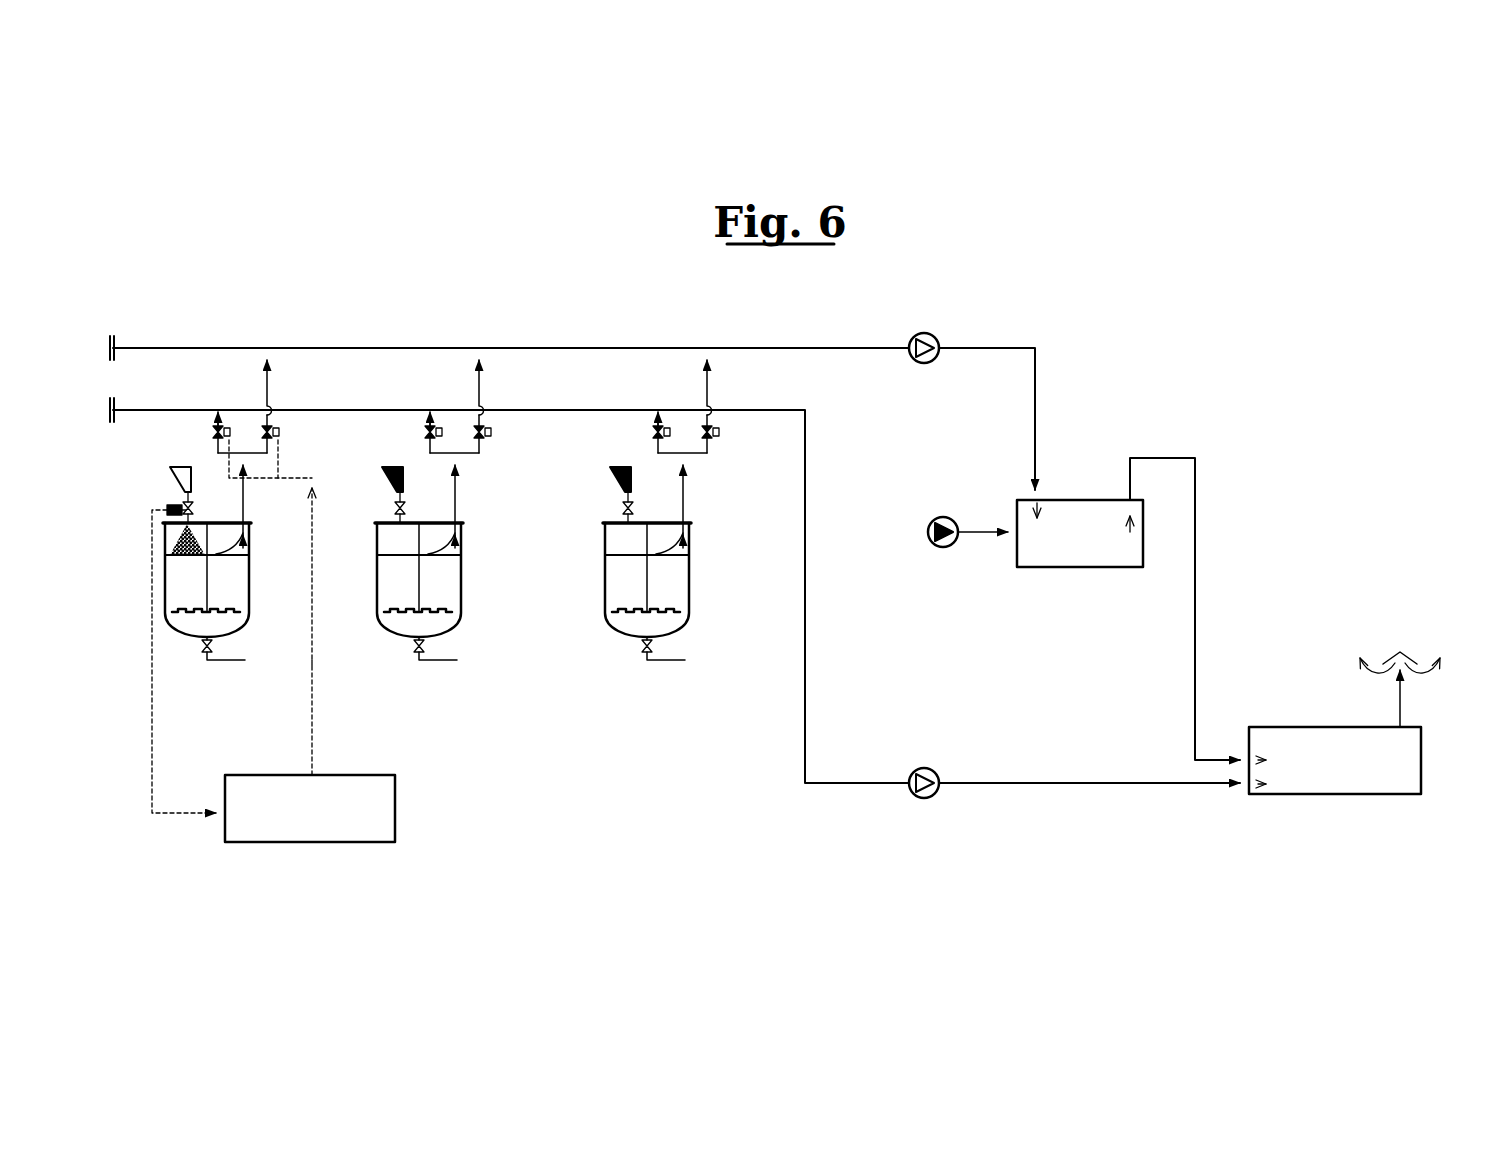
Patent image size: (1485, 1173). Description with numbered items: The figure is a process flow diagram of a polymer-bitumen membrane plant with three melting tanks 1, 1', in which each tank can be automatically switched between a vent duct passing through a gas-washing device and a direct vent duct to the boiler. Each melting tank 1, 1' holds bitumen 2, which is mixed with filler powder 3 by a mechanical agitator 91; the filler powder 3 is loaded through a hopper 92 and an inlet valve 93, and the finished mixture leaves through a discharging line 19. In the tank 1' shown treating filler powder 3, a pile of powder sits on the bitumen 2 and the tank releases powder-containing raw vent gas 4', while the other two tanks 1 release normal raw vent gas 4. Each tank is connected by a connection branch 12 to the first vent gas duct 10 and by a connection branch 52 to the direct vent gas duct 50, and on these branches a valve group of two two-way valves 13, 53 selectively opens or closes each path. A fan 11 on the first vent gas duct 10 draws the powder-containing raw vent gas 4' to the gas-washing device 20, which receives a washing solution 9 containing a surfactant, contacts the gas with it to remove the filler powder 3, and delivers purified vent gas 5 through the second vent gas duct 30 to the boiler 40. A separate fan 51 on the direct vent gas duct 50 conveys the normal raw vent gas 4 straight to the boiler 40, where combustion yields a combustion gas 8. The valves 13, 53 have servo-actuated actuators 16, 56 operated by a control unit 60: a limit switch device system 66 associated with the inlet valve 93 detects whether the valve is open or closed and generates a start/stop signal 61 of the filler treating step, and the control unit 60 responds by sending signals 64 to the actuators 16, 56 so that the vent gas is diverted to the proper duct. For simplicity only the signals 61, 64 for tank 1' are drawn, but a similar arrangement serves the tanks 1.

The melting tank 1 is at (522, 564).
The melting tank 1' is at (180, 567).
The bitumen 2 is at (238, 578).
The filler powder 3 is at (170, 543).
The normal raw vent gas 4 is at (589, 507).
The powder-containing raw vent gas 4' is at (754, 651).
The purified vent gas 5 is at (1128, 515).
The combustion gas 8 is at (1436, 664).
The washing solution 9 is at (988, 533).
The first vent gas duct 10 is at (157, 347).
The suction device 11 is at (915, 361).
The connection branch 12 is at (269, 358).
The two-way valve 13 is at (272, 430).
The servo-actuated actuator 16 is at (282, 440).
The discharging line 19 is at (228, 661).
The gas-washing device 20 is at (998, 502).
The second vent gas duct 30 is at (1158, 457).
The boiler 40 is at (1312, 714).
The direct vent gas duct 50 is at (157, 409).
The suction device 51 is at (914, 797).
The connection branch 52 is at (214, 413).
The two-way valve 53 is at (212, 440).
The servo-actuated actuator 56 is at (230, 428).
The control unit 60 is at (432, 770).
The start/stop signal 61 is at (183, 812).
The signal 64 is at (313, 723).
The limit switch device system 66 is at (166, 508).
The mechanical agitator 91 is at (232, 613).
The hopper 92 is at (172, 470).
The valve 93 is at (184, 506).